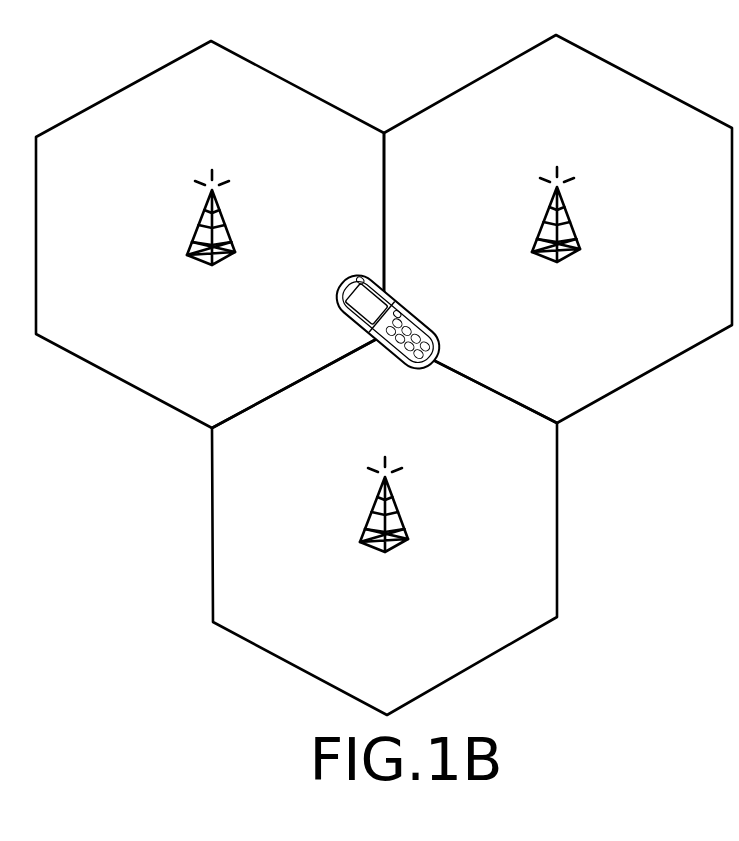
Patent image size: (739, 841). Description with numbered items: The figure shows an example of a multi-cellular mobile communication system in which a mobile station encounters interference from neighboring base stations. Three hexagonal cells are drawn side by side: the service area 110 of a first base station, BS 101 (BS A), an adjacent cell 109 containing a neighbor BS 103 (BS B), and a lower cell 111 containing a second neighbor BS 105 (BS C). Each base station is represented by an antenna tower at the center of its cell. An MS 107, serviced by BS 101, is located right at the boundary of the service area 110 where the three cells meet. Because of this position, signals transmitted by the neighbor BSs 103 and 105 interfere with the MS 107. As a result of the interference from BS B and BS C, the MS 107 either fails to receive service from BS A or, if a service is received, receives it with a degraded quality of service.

The BS 101 is at (213, 254).
The neighbor BS 103 is at (559, 251).
The neighbor BS 105 is at (388, 543).
The MS 107 is at (388, 333).
The cell of base station B 109 is at (642, 82).
The service area 110 is at (297, 83).
The cell of base station C 111 is at (559, 517).